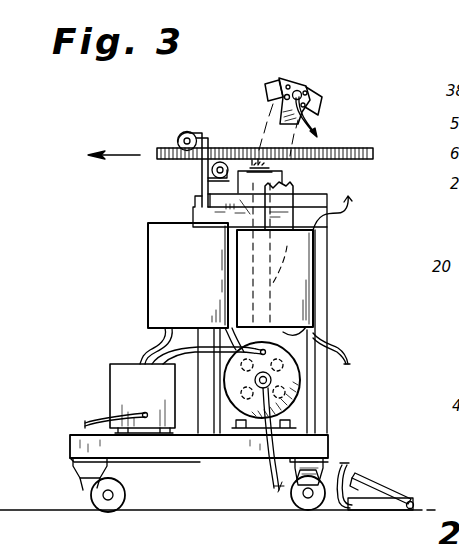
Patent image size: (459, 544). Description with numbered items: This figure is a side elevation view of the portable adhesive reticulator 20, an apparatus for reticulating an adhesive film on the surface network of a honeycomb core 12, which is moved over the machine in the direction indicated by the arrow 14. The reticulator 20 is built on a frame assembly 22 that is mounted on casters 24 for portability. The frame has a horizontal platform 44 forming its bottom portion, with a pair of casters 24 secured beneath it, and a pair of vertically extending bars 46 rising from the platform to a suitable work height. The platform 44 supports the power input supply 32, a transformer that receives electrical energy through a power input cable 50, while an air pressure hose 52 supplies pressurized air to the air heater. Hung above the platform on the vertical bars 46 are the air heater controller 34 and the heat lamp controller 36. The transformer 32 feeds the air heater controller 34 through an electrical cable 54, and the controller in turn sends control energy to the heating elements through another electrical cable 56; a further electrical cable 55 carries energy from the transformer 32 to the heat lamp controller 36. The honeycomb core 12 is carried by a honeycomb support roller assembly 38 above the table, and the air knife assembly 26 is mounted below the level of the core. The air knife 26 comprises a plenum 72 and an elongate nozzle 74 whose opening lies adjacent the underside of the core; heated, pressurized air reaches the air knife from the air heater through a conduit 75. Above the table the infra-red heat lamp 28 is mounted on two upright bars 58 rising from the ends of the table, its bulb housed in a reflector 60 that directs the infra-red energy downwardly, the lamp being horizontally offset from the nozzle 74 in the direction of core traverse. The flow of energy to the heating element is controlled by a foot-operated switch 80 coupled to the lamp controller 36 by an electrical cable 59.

The honeycomb core 12 is at (375, 152).
The arrow 14 is at (118, 155).
The portable adhesive reticulator 20 is at (115, 236).
The frame assembly 22 is at (333, 447).
The casters 24 is at (90, 501).
The air knife assembly 26 is at (287, 177).
The infra-red heat lamp 28 is at (305, 81).
The power input supply 32 is at (118, 375).
The air heater controller 34 is at (165, 277).
The heat lamp controller 36 is at (300, 276).
The honeycomb support roller assembly 38 is at (203, 134).
The horizontal platform 44 is at (152, 449).
The second pair of vertically extending bars 46 is at (206, 393).
The power input cable 50 is at (110, 419).
The air pressure hose 52 is at (272, 469).
The electrical cable 54 is at (152, 345).
The electrical cable 55 is at (150, 357).
The electrical cable 56 is at (200, 331).
The upright bars 58 is at (268, 104).
The electrical cable 59 is at (345, 355).
The reflector 60 is at (320, 104).
The plenum 72 is at (237, 184).
The nozzle 74 is at (253, 162).
The conduit 75 is at (281, 254).
The foot-operated switch 80 is at (388, 501).